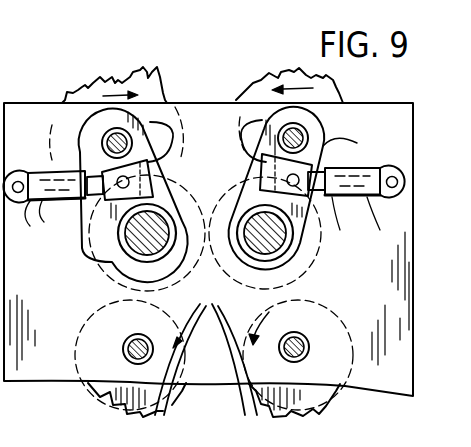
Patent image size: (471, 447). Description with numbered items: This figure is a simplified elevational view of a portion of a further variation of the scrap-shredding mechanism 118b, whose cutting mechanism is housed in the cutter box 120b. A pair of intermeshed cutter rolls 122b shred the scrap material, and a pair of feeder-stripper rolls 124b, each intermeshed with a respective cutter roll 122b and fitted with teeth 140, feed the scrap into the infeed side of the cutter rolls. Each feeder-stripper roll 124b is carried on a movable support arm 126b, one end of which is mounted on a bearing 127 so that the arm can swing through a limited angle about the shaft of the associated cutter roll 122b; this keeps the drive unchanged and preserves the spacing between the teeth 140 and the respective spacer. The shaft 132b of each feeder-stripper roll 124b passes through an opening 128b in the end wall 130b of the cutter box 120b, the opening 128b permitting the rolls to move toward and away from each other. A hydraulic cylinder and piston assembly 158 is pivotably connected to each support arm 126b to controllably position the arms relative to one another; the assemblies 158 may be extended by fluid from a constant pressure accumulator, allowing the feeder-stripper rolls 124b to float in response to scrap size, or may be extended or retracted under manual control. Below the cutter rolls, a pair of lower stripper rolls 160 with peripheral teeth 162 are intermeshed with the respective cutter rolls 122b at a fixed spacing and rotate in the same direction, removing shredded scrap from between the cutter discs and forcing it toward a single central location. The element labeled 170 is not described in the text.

The scrap-shredding mechanism 118b is at (201, 89).
The cutter box 120b is at (227, 103).
The cutter roll 122b is at (81, 247).
The feeder-stripper roll 124b is at (107, 79).
The support arm 126b is at (57, 116).
The bearing 127 is at (128, 247).
The opening 128b is at (183, 163).
The end wall 130b is at (40, 370).
The shaft 132b is at (113, 132).
The teeth 140 is at (157, 70).
The hydraulic cylinder and piston assembly 158 is at (34, 173).
The lower stripper roll 160 is at (231, 385).
The peripheral teeth 162 is at (206, 350).
The guide 170 is at (300, 443).